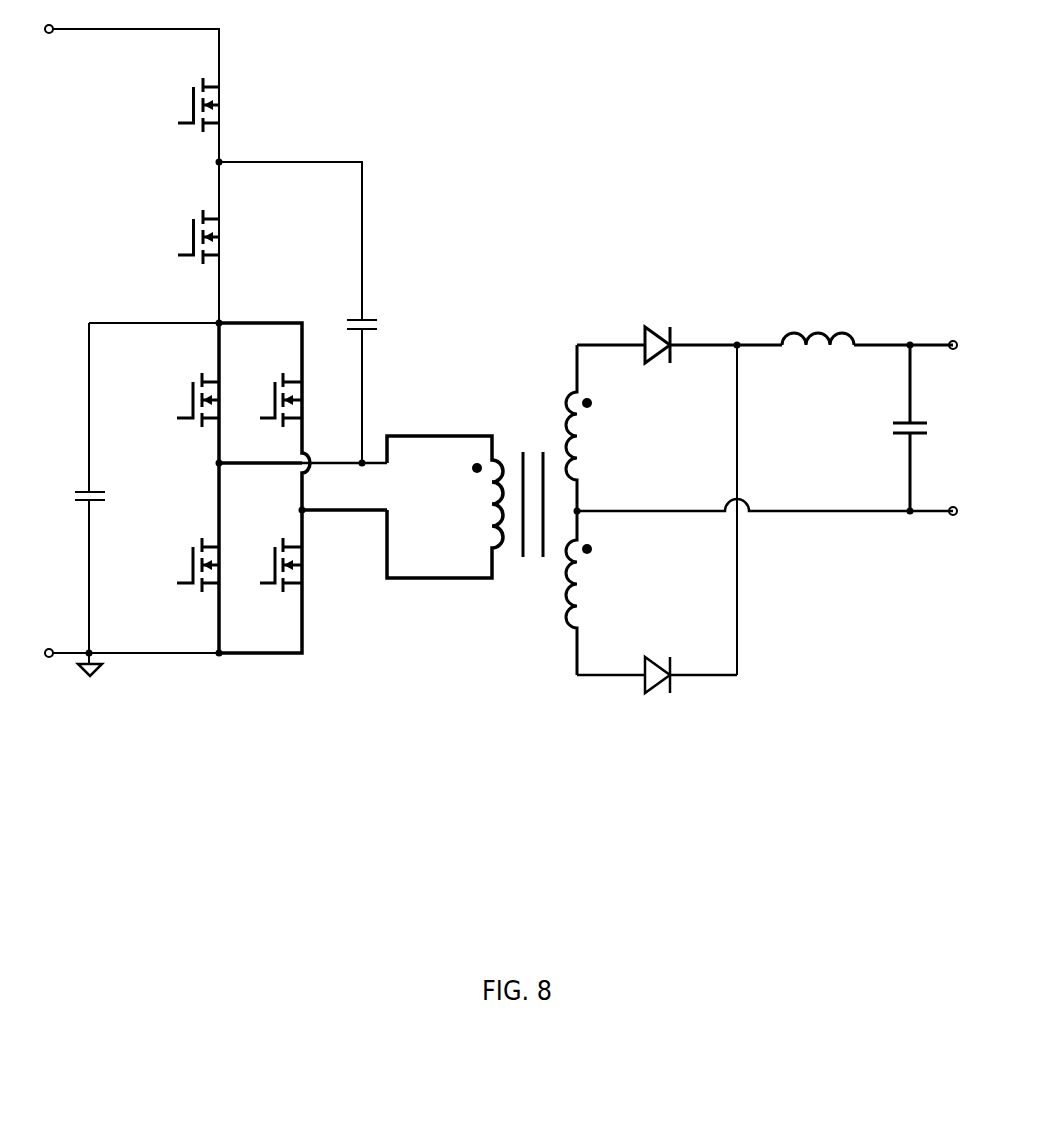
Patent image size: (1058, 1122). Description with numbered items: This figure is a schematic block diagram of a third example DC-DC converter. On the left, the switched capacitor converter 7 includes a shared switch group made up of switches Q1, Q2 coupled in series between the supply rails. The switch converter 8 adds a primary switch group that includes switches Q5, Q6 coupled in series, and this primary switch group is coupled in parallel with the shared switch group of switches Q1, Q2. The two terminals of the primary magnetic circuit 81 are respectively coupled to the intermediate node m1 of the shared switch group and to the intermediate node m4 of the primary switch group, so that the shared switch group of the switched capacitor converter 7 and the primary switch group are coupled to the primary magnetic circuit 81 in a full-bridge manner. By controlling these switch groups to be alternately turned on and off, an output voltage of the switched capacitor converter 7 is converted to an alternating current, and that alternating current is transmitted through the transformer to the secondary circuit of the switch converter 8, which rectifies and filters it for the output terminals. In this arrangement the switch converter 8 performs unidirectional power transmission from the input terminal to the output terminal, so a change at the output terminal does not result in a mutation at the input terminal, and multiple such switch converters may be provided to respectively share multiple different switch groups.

The switched capacitor converter 7 is at (216, 350).
The switch converter 8 is at (677, 262).
The primary magnetic circuit 81 is at (449, 421).
The switch Q1 is at (183, 400).
The switch Q2 is at (184, 565).
The switch Q5 is at (271, 400).
The switch Q6 is at (272, 565).
The intermediate node m1 is at (284, 466).
The intermediate node m4 is at (325, 509).